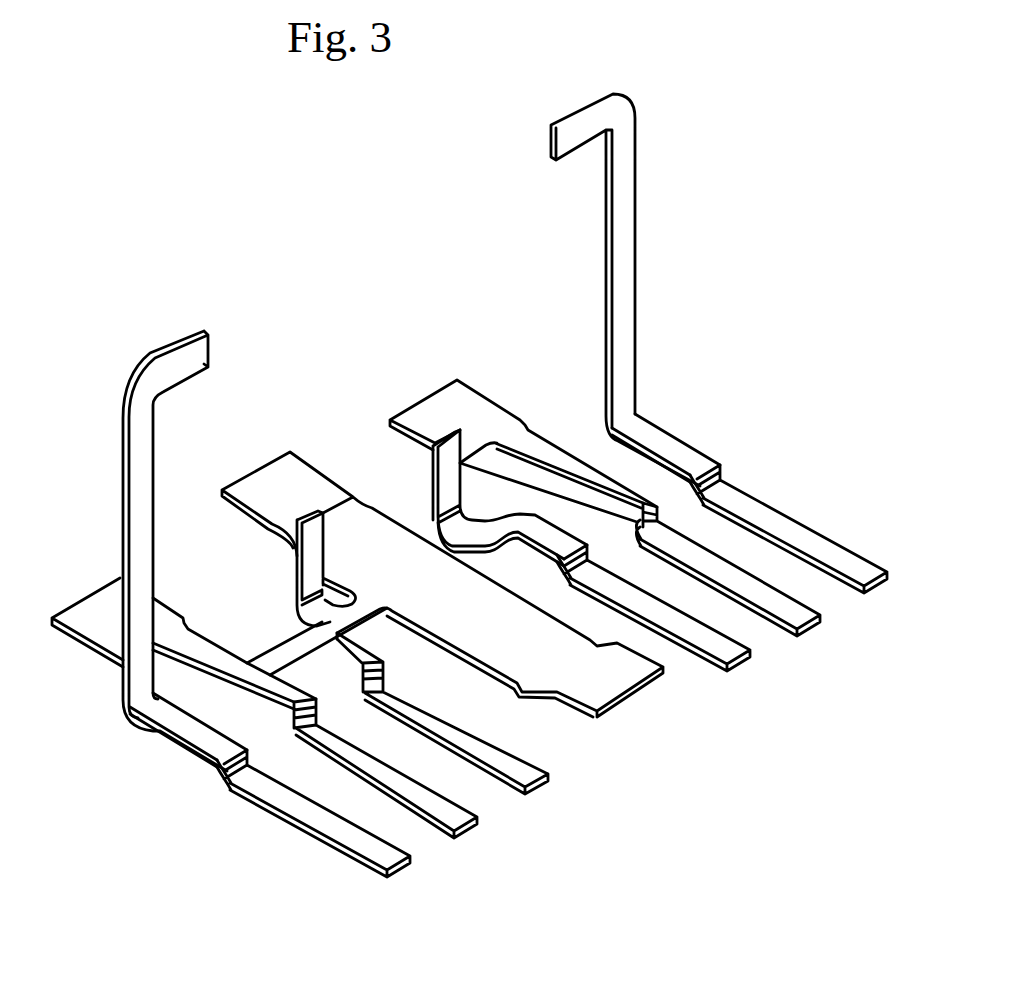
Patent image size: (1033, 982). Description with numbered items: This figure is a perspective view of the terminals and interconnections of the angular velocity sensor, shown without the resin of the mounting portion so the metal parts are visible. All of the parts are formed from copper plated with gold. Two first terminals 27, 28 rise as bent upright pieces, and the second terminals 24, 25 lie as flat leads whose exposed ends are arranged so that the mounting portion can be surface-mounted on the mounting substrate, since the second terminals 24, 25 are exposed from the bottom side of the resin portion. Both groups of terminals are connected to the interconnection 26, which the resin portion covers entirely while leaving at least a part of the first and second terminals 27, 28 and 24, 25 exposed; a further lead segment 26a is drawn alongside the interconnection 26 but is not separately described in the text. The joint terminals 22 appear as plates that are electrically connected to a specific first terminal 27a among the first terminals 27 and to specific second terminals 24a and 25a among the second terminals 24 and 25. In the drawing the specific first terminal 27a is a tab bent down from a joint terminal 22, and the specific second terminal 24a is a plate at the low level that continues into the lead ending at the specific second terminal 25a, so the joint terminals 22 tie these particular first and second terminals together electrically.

The joint terminal 22 is at (264, 482).
The second terminal 24 is at (440, 405).
The specific second terminal 24a is at (80, 606).
The second terminal 25 is at (880, 590).
The specific second terminal 25a is at (548, 786).
The interconnection 26 is at (700, 462).
The bent lead portion 26a is at (275, 700).
The first terminal 27 is at (440, 480).
The specific first terminal 27a is at (308, 575).
The first terminal 28 is at (580, 130).